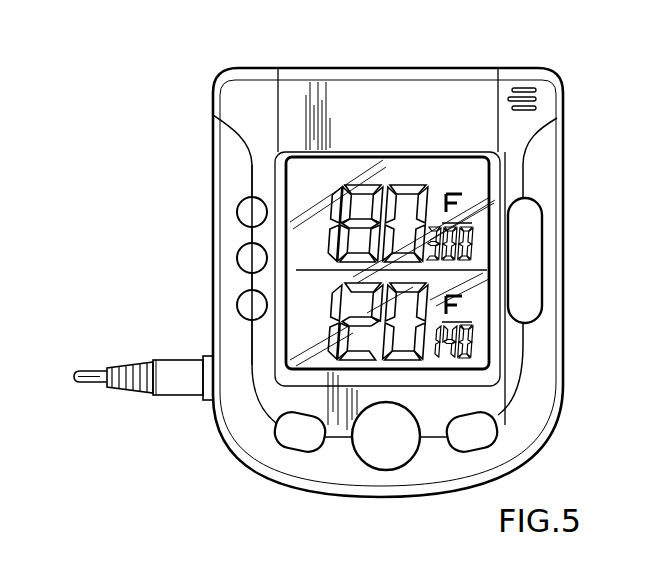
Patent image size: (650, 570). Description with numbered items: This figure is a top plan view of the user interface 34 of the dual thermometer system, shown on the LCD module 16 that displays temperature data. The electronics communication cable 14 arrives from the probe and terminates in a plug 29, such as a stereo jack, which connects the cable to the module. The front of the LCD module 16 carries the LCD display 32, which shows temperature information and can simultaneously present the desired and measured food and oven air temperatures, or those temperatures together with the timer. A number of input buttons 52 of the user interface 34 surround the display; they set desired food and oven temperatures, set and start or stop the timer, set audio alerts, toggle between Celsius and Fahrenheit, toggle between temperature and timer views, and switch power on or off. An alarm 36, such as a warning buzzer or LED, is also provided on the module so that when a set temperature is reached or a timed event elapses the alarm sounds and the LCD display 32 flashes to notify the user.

The LCD module 16 is at (299, 53).
The LCD display 32 is at (444, 170).
The user interface 34 is at (512, 182).
The alarm 36 is at (537, 107).
The input buttons 52 is at (243, 303).
The plug 29 is at (168, 370).
The electronics communication cable 14 is at (80, 377).